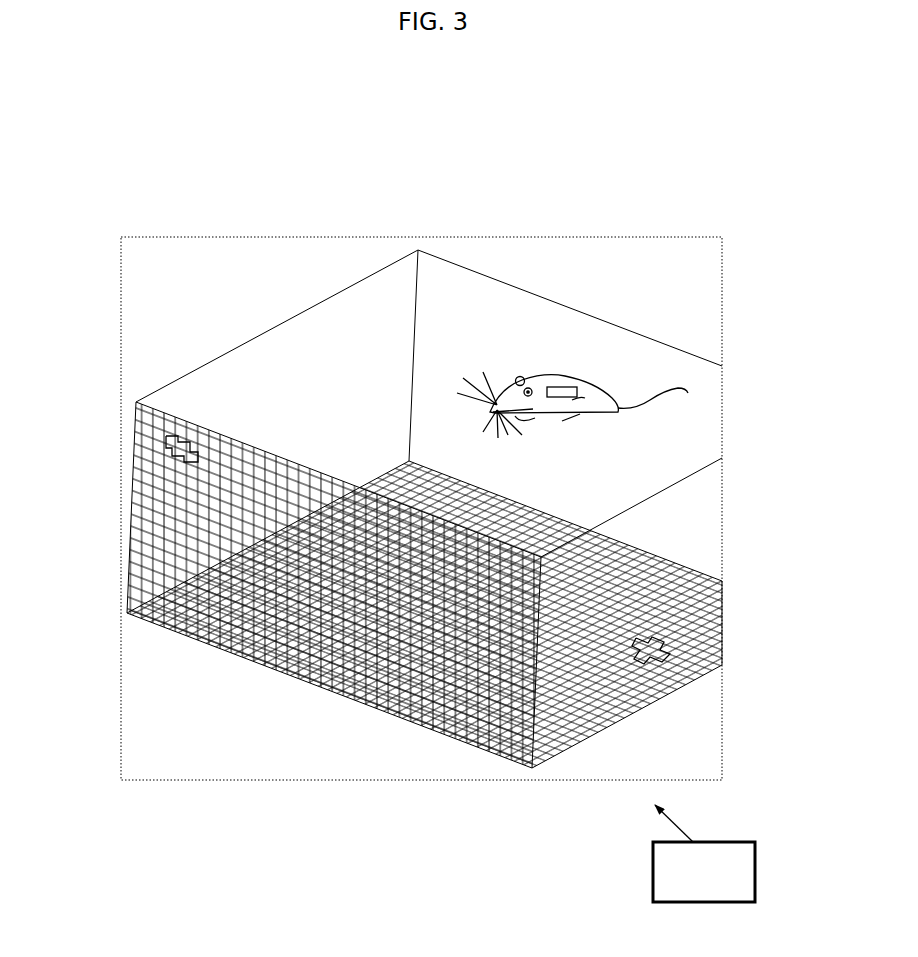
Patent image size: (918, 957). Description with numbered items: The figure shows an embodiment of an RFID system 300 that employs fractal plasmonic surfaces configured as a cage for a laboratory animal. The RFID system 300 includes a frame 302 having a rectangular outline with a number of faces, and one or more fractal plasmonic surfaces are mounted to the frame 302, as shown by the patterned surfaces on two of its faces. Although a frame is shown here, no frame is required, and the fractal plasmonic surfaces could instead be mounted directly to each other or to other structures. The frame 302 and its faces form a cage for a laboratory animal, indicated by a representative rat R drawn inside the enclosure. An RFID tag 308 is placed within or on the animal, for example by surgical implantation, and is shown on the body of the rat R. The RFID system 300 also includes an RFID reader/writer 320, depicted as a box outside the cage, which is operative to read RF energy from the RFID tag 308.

The RFID system 300 is at (157, 142).
The frame 302 is at (378, 263).
The RFID tag 308 is at (562, 379).
The rat R is at (631, 296).
The RFID reader/writer 320 is at (704, 853).